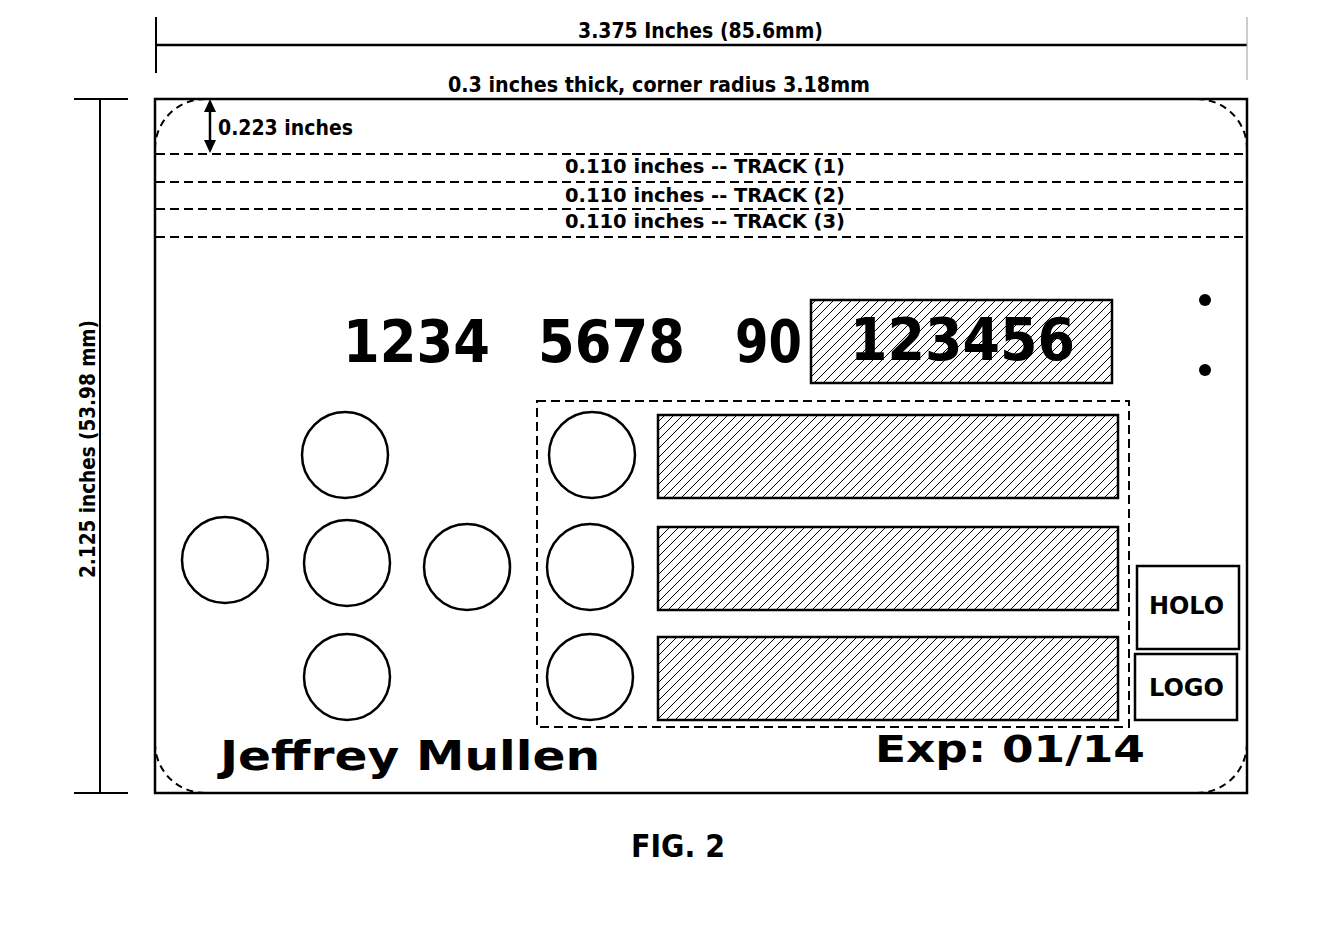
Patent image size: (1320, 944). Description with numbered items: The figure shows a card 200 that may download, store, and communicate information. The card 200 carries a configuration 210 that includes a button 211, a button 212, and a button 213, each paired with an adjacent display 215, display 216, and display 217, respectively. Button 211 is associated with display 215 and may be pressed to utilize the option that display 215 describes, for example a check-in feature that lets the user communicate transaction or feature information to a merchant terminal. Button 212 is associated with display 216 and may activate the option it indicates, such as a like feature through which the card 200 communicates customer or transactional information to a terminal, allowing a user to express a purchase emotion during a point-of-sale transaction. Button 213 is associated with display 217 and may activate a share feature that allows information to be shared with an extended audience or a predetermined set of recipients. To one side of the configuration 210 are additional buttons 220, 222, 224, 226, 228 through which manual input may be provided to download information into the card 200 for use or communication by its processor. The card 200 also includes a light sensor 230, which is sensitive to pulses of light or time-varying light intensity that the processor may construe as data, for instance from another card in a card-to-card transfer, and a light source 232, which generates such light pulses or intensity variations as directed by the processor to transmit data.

The card 200 is at (1283, 436).
The configuration 210 is at (727, 400).
The button 211 is at (553, 447).
The button 212 is at (558, 540).
The button 213 is at (558, 650).
The display 215 is at (690, 498).
The display 216 is at (690, 610).
The display 217 is at (670, 722).
The button 220 is at (340, 413).
The button 222 is at (470, 525).
The button 224 is at (250, 525).
The button 226 is at (333, 522).
The button 228 is at (333, 637).
The light sensor 230 is at (1205, 298).
The light source 232 is at (1205, 368).